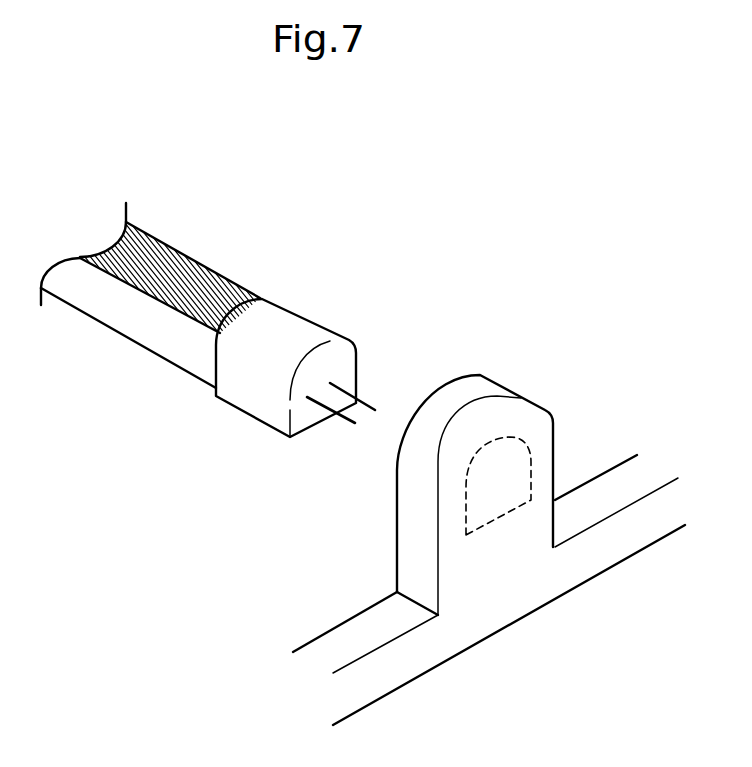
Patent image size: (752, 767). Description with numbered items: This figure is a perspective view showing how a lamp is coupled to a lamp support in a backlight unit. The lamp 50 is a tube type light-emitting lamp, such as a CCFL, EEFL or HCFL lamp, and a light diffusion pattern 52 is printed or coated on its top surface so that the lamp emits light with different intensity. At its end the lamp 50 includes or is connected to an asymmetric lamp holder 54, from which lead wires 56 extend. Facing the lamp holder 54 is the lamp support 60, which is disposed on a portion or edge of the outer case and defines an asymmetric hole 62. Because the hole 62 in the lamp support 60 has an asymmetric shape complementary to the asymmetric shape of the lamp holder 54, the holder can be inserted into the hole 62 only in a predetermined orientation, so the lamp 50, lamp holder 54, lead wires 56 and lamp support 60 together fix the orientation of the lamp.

The lamp 50 is at (148, 332).
The light diffusion pattern 52 is at (200, 268).
The lamp holder 54 is at (283, 322).
The lead wires 56 is at (367, 400).
The lamp support 60 is at (515, 412).
The asymmetric hole 62 is at (497, 492).